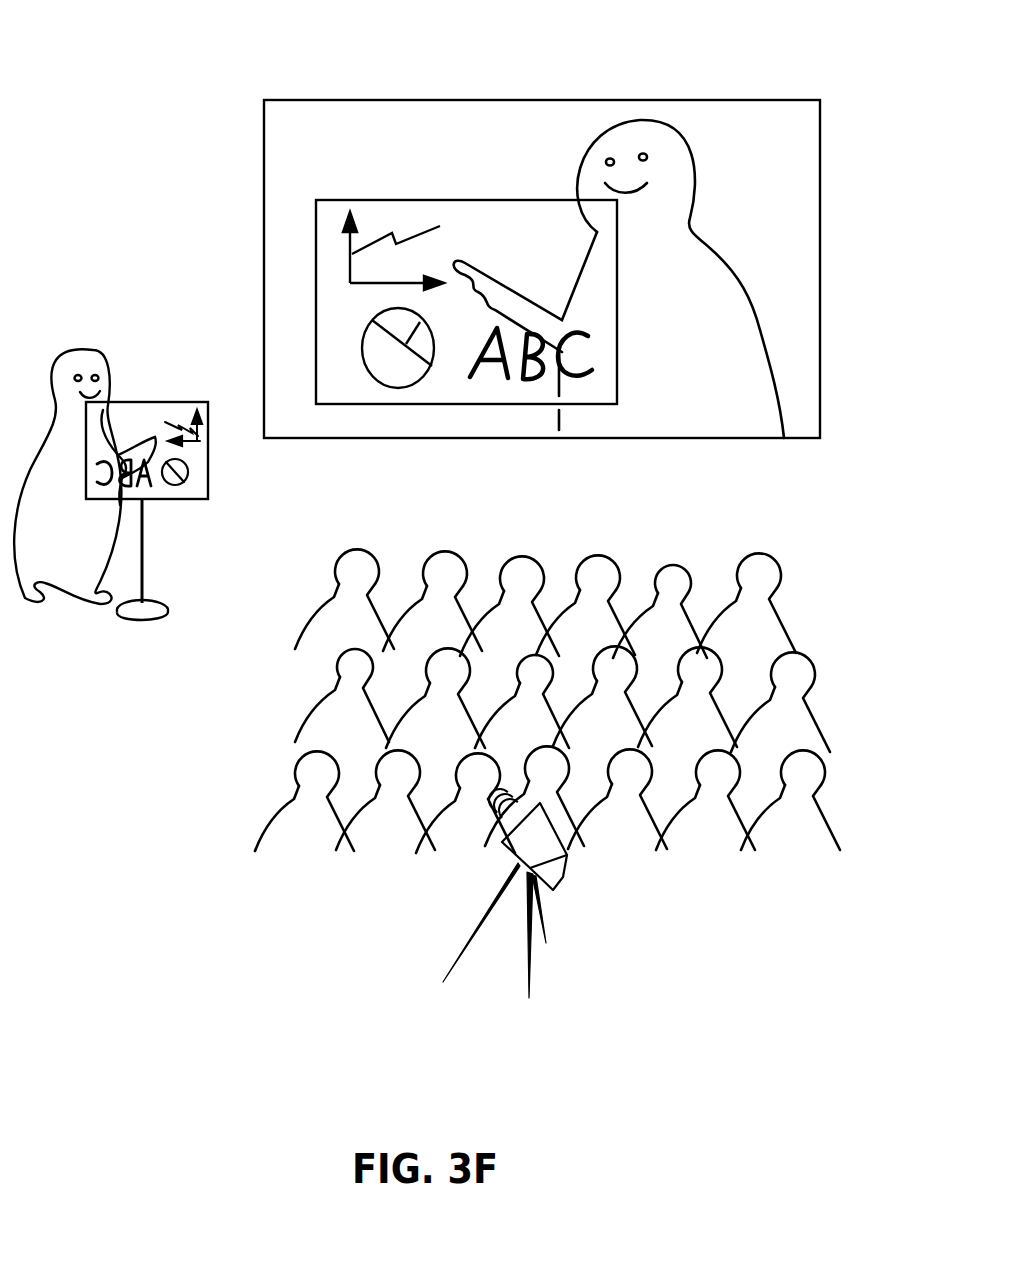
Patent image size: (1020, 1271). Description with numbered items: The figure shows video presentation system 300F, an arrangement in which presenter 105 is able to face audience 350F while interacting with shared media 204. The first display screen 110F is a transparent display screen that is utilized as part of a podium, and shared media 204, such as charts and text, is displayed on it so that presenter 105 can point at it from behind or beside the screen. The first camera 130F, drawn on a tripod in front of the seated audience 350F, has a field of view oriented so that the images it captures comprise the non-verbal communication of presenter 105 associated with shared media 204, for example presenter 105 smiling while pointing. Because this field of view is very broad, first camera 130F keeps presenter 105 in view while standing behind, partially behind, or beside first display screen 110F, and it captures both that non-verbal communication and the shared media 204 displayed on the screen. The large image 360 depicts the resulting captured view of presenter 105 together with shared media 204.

The video presentation system 300F is at (128, 37).
The display 360 is at (264, 138).
The presenter 105 is at (93, 350).
The first display screen 110F is at (185, 500).
The shared media 204 is at (193, 465).
The audience 350F is at (282, 663).
The first camera 130F is at (571, 866).